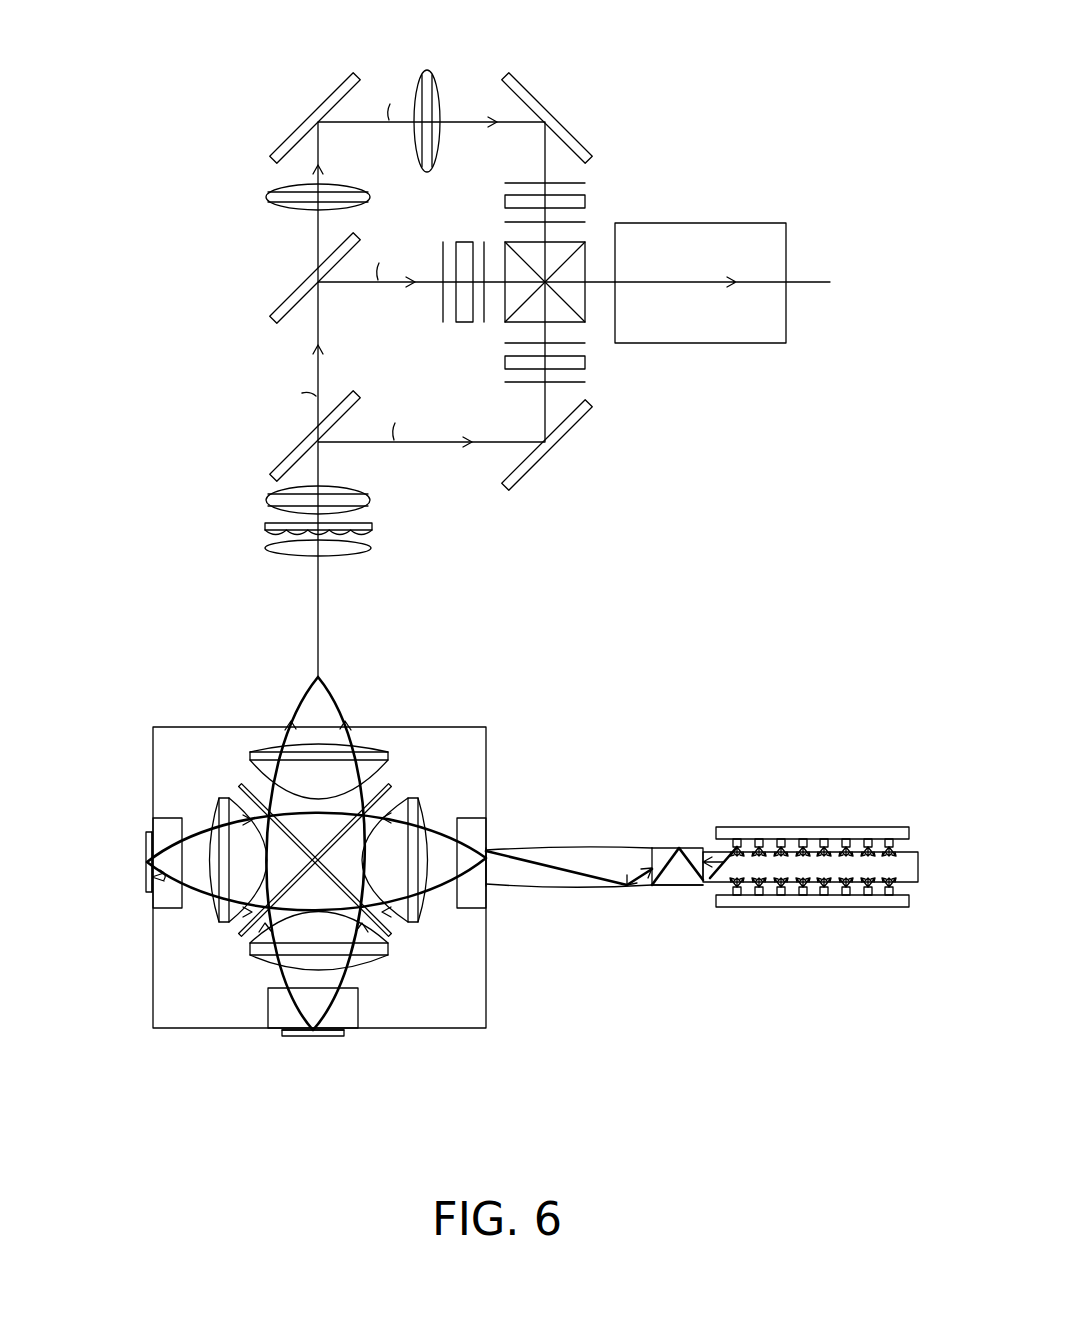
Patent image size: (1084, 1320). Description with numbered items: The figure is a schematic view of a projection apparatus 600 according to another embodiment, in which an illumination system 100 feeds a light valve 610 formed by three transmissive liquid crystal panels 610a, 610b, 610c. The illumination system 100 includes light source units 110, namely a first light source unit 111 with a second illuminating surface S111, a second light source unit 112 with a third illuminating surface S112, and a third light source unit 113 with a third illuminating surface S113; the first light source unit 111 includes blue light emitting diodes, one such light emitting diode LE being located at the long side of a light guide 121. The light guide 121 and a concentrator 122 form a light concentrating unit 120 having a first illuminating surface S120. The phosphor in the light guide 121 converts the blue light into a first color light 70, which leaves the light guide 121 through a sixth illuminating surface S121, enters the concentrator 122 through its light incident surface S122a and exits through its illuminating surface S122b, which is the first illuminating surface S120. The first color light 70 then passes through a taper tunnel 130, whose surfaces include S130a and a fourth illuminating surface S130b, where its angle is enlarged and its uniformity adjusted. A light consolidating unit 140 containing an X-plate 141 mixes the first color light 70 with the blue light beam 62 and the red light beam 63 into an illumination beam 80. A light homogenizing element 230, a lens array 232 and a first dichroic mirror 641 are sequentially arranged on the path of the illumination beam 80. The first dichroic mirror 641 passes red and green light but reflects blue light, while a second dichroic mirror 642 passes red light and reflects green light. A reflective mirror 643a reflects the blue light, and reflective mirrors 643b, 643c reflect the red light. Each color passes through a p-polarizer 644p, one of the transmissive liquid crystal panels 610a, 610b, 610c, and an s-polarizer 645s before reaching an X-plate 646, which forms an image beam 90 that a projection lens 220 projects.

The projection apparatus 600 is at (185, 1164).
The light valve 610 is at (796, 8).
The transmissive liquid crystal panel 610a is at (616, 383).
The transmissive liquid crystal panel 610b is at (458, 242).
The transmissive liquid crystal panel 610c is at (587, 200).
The reflective mirror 643a is at (512, 478).
The reflective mirror 643b is at (288, 141).
The reflective mirror 643c is at (576, 142).
The p-polarizer 644p is at (443, 258).
The s-polarizer 645s is at (484, 247).
The X-plate 646 is at (598, 267).
The second dichroic mirror 642 is at (290, 302).
The first dichroic mirror 641 is at (290, 462).
The image beam 90 is at (812, 288).
The projection lens 220 is at (742, 350).
The lens array 232 is at (242, 542).
The light homogenizing element 230 is at (265, 535).
The illumination system 100 is at (736, 686).
The light consolidating unit 140 is at (177, 703).
The illumination beam 80 is at (340, 697).
The X-plate 141 is at (385, 800).
The light beam 62 is at (353, 972).
The light beam 63 is at (205, 905).
The taper tunnel 130 is at (567, 850).
The light exit surface of light guide S130a is at (652, 847).
The fourth illuminating surface S130b is at (486, 847).
The first color light 70 is at (540, 862).
The light concentrating unit 120 is at (780, 775).
The concentrator 122 is at (697, 850).
The light guide 121 is at (795, 865).
The sixth illuminating surface S121 is at (690, 888).
The light incident surface S122a is at (703, 858).
The first illuminating surface S120 is at (640, 887).
The illuminating surface S122b is at (650, 940).
The light source unit 110 is at (783, 1058).
The first light source unit 111 is at (909, 816).
The second illuminating surface S111 is at (838, 856).
The light emitting diode LE is at (888, 895).
The second light source unit 112 is at (296, 1037).
The third illuminating surface S112 is at (338, 1033).
The third light source unit 113 is at (145, 850).
The third illuminating surface S113 is at (165, 890).